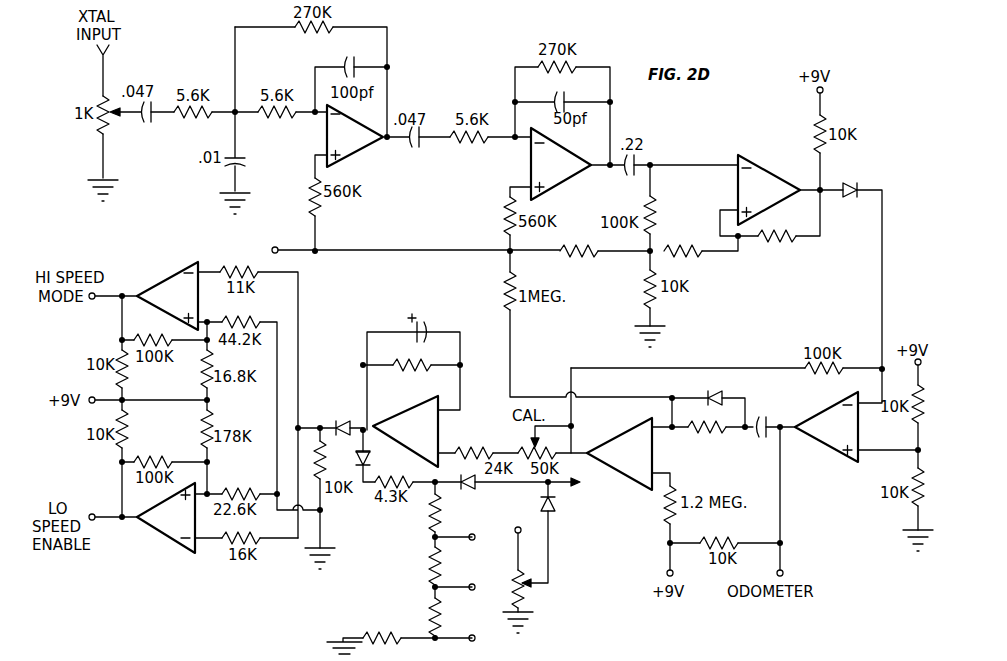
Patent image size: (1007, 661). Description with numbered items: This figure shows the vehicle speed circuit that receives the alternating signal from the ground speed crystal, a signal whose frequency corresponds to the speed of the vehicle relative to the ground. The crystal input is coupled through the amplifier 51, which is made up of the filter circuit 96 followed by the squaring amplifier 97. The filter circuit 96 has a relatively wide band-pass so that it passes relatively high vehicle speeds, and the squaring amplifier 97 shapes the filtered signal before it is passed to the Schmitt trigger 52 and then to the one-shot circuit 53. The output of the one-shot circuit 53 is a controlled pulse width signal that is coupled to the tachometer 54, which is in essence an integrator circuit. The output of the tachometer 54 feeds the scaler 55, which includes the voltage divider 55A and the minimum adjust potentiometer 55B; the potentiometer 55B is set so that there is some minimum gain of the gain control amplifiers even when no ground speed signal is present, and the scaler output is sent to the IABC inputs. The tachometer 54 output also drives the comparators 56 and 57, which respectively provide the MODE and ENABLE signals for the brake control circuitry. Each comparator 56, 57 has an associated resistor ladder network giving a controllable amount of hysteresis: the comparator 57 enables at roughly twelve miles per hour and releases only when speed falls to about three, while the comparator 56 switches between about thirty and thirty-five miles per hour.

The amplifier 51 is at (452, 238).
The Schmitt trigger 52 is at (768, 198).
The one-shot circuit 53 is at (720, 485).
The tachometer 54 is at (475, 438).
The scaler 55 is at (508, 562).
The voltage divider 55A is at (426, 565).
The minimum adjust potentiometer 55B is at (546, 570).
The comparator 56 is at (185, 306).
The comparator 57 is at (180, 529).
The filter circuit 96 is at (357, 146).
The squaring amplifier 97 is at (560, 178).